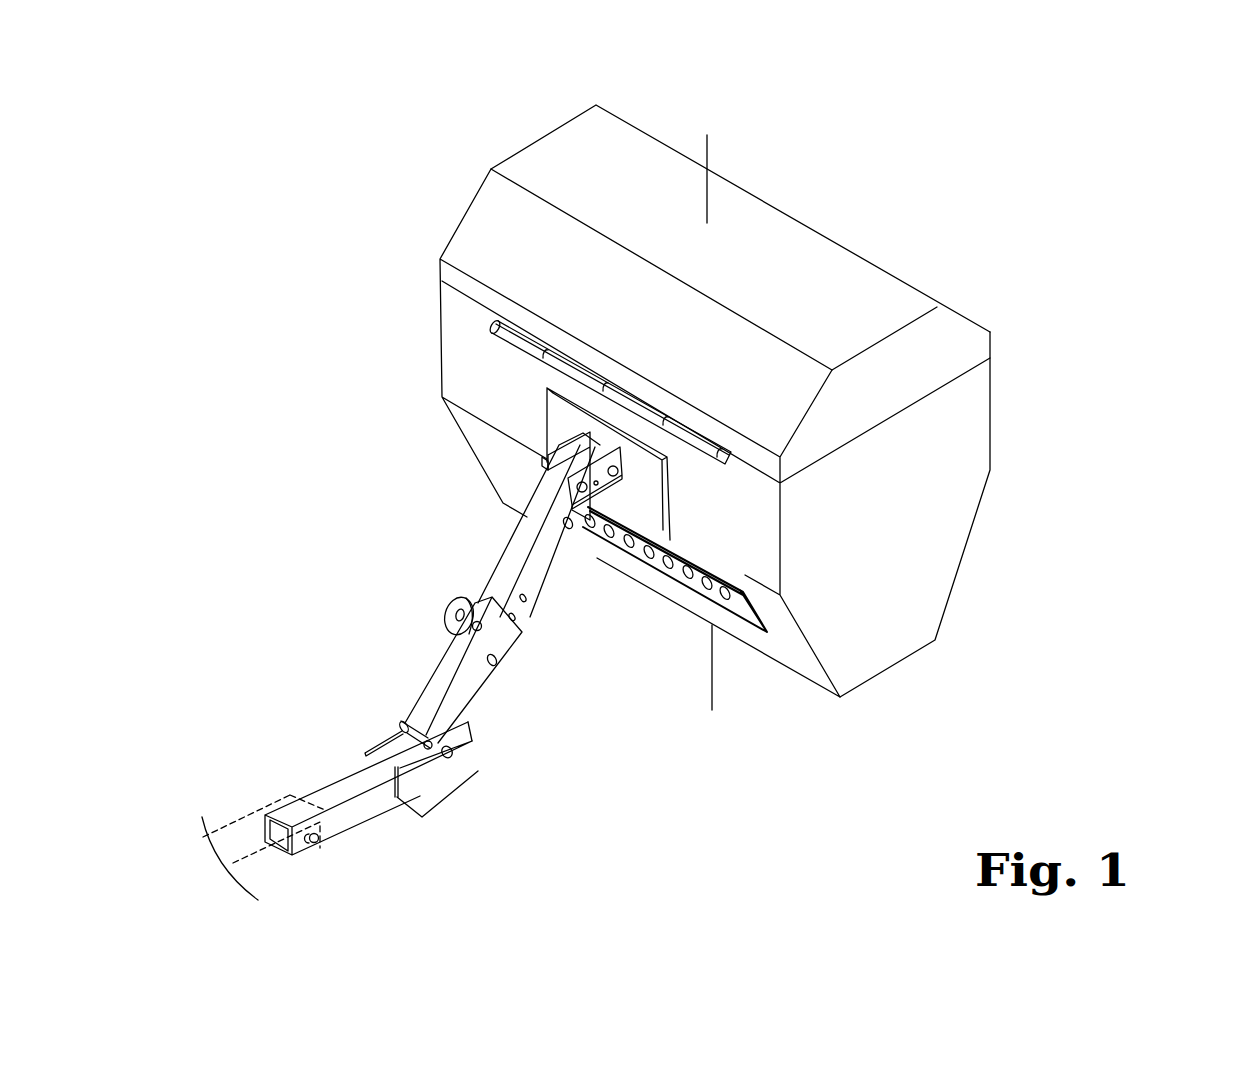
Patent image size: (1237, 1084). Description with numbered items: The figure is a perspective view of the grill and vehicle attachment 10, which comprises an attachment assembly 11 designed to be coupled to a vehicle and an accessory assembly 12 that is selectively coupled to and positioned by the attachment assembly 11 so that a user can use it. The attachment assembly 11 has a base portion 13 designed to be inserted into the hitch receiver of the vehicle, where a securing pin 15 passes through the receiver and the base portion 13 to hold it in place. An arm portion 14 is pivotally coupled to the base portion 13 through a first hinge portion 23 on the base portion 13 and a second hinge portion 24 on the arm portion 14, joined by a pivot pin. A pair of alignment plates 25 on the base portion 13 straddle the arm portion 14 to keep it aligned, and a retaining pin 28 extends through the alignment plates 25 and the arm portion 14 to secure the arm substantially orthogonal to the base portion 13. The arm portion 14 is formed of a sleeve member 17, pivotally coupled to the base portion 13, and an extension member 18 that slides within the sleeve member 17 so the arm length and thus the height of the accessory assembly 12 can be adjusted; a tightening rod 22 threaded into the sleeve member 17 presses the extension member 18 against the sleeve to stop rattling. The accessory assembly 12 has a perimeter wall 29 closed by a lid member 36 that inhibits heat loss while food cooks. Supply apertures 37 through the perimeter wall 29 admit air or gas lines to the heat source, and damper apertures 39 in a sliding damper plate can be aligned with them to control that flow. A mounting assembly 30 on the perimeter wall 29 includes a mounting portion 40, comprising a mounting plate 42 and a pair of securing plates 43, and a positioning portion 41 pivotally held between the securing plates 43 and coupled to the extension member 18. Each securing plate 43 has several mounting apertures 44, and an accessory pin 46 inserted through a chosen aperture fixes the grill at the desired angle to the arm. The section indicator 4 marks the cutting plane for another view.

The grill and vehicle attachment 10 is at (1072, 213).
The attachment assembly 11 is at (405, 690).
The accessory assembly 12 is at (990, 291).
The base portion 13 is at (360, 803).
The arm portion 14 is at (485, 693).
The securing pin 15 is at (318, 842).
The sleeve member 17 is at (418, 797).
The extension member 18 is at (515, 567).
The tightening rod 22 is at (460, 605).
The first hinge portion 23 is at (372, 752).
The second hinge portion 24 is at (404, 725).
The alignment plates 25 is at (374, 746).
The retaining pin 28 is at (452, 768).
The perimeter wall 29 is at (968, 441).
The mounting assembly 30 is at (527, 430).
The lid member 36 is at (868, 300).
The supply apertures 37 is at (605, 522).
The damper apertures 39 is at (722, 600).
The mounting portion 40 is at (547, 410).
The positioning portion 41 is at (545, 500).
The mounting plate 42 is at (648, 472).
The securing plates 43 is at (630, 452).
The mounting apertures 44 is at (647, 548).
The accessory pin 46 is at (600, 532).
The section line 4- 4 is at (707, 135).